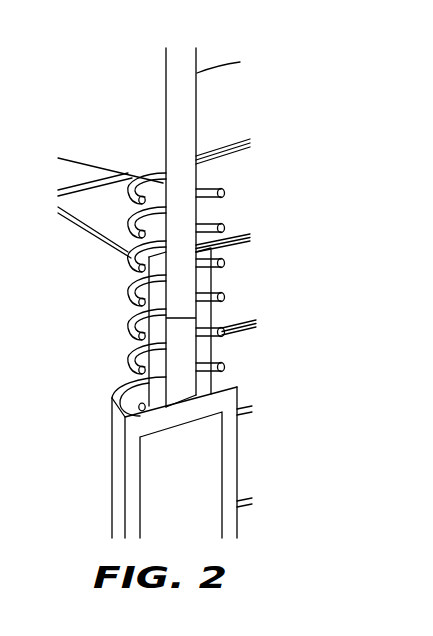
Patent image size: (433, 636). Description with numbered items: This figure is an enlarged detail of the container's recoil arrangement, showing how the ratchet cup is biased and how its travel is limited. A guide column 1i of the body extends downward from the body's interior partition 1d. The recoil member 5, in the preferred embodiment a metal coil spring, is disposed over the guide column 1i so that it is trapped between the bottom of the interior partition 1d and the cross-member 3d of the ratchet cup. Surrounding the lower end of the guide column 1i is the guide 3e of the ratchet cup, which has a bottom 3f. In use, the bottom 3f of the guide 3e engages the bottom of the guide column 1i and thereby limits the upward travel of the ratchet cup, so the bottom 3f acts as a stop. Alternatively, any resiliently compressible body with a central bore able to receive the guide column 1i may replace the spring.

The interior partition 1d is at (188, 60).
The guide column 1i is at (188, 213).
The recoil member 5 is at (223, 195).
The guide 3e is at (183, 327).
The bottom 3f is at (183, 400).
The cross-member 3d is at (237, 457).